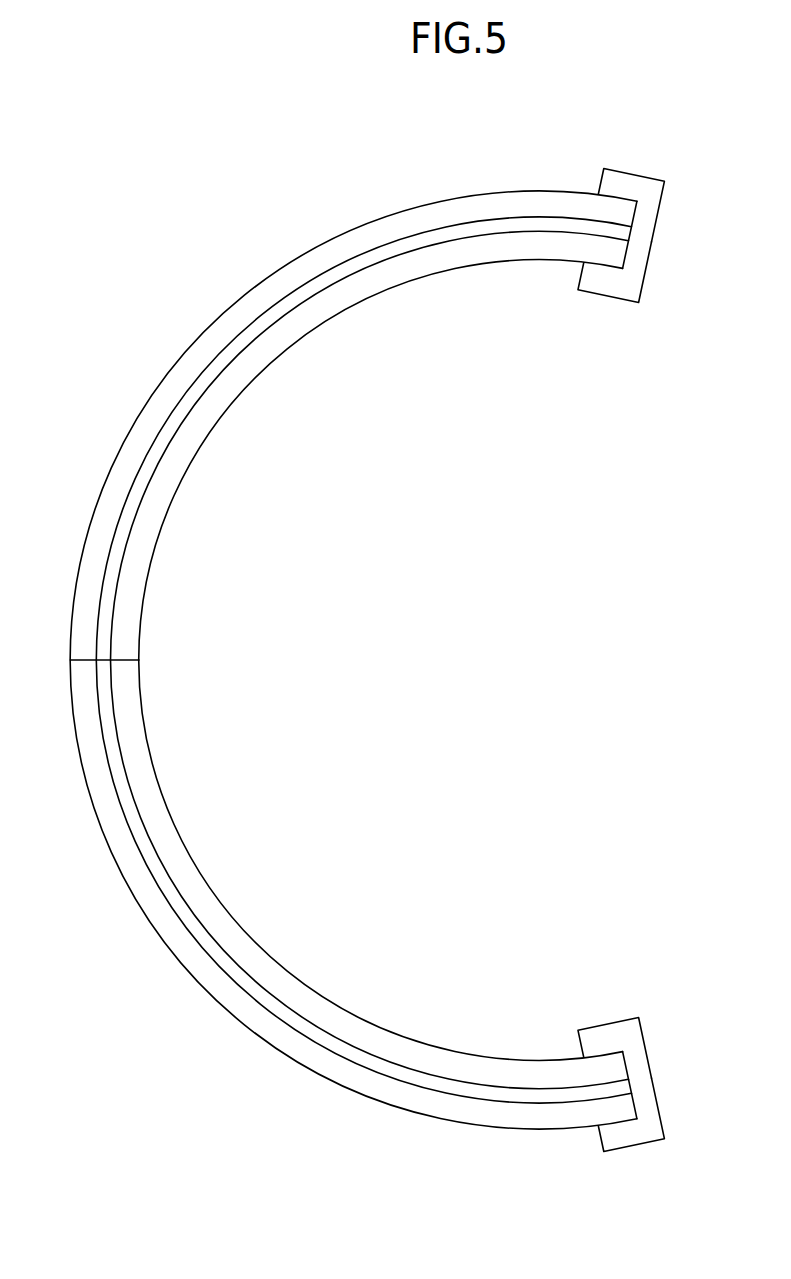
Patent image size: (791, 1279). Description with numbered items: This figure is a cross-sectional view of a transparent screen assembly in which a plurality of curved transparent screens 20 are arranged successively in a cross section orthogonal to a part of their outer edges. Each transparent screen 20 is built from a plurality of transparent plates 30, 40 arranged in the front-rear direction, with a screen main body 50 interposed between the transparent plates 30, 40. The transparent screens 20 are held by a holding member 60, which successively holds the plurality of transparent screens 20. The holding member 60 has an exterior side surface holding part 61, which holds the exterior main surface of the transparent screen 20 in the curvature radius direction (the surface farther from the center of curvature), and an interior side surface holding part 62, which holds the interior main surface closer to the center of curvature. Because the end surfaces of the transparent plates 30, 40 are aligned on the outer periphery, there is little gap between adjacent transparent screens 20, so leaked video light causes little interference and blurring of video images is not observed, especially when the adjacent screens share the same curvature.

The transparent screen 20 is at (353, 660).
The transparent plate 30 is at (197, 357).
The transparent plate 40 is at (210, 407).
The screen main body 50 is at (170, 430).
The holding member 60 is at (648, 663).
The exterior side surface holding part 61 is at (617, 182).
The interior side surface holding part 62 is at (595, 282).